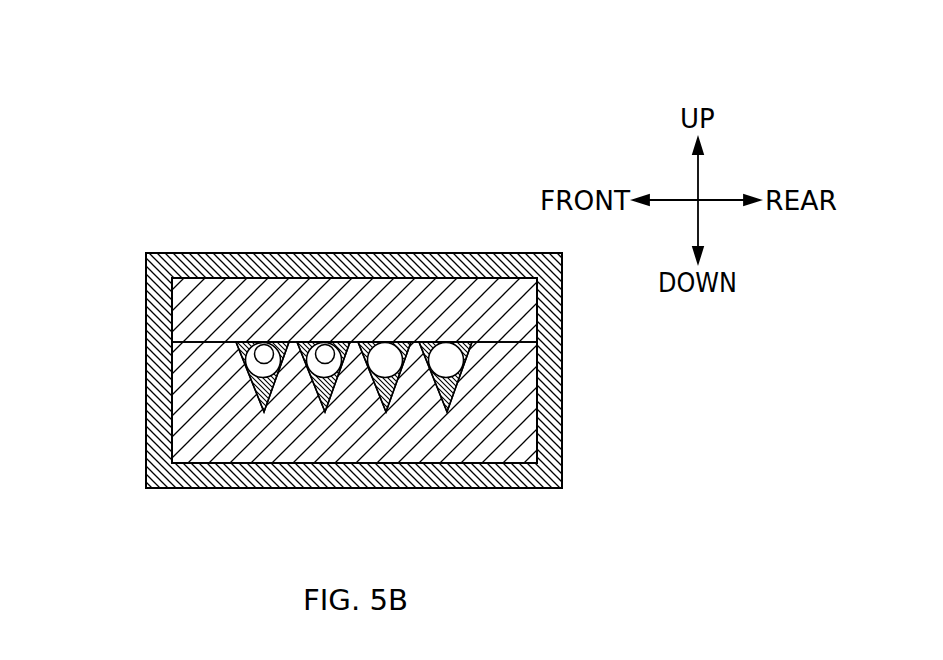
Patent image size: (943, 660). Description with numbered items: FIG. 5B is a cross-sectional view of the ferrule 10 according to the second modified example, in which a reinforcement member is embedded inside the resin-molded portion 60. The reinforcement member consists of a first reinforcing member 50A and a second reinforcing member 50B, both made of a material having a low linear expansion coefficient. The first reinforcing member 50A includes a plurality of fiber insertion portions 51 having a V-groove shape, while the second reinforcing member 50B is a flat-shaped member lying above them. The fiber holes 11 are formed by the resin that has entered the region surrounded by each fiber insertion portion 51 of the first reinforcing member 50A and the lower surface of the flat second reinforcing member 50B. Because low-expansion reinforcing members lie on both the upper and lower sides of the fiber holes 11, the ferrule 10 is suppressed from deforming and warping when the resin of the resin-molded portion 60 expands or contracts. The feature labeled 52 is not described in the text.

The ferrule 10 is at (204, 129).
The resin-molded portion 60 is at (175, 263).
The second reinforcing member 50B is at (193, 304).
The first reinforcing member 50A is at (193, 397).
The fiber hole 11 is at (342, 342).
The fiber insertion portion 51 is at (331, 402).
The light receiving element 52 is at (408, 345).